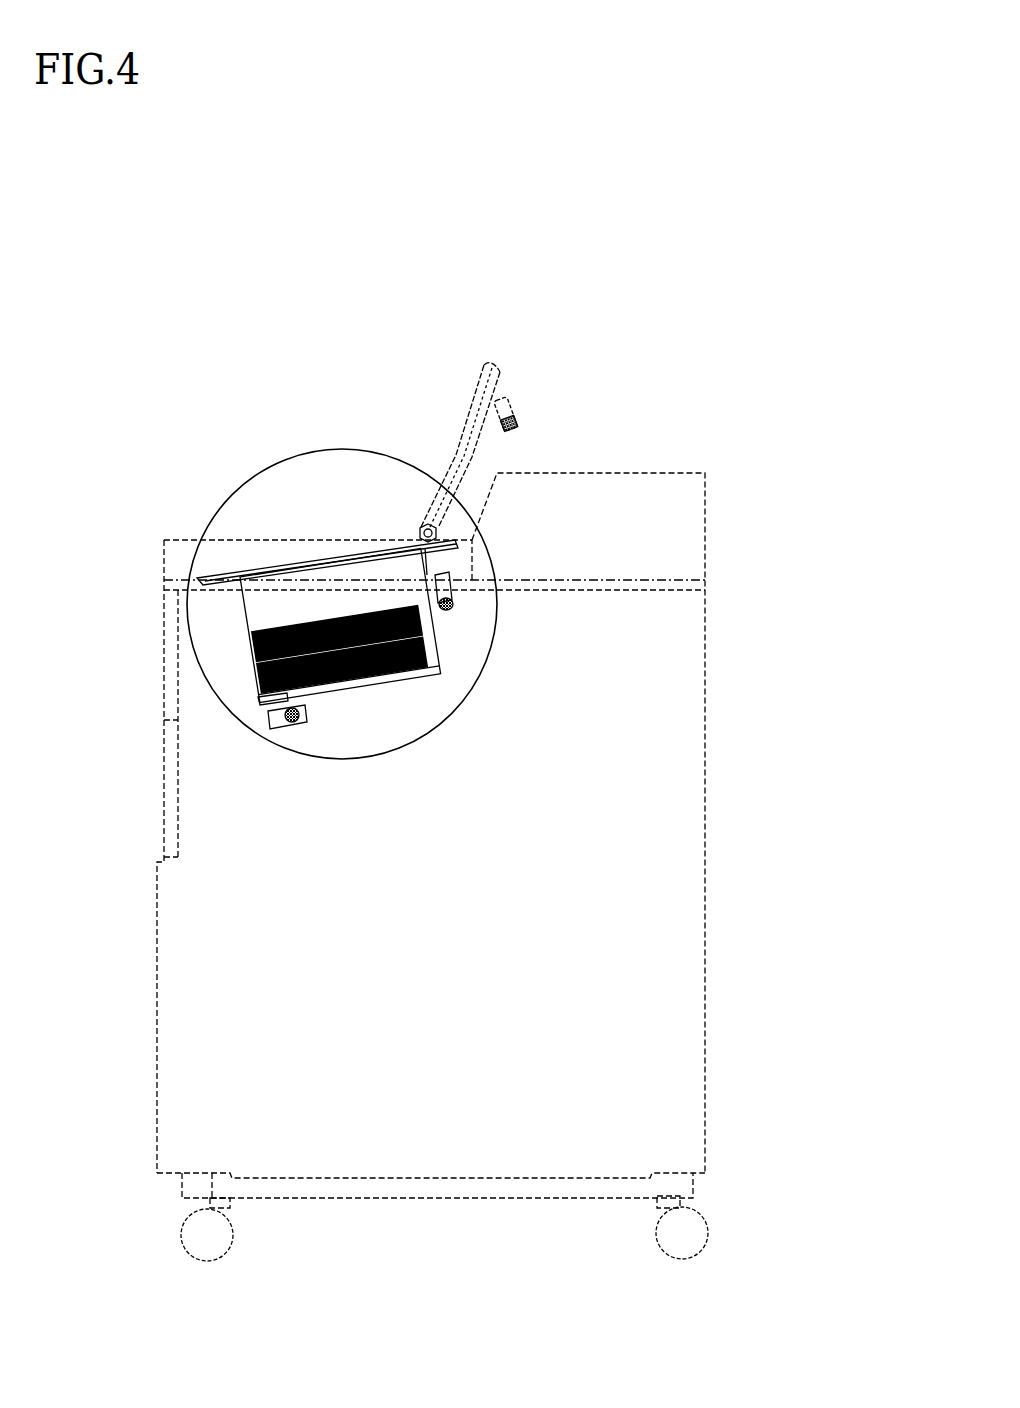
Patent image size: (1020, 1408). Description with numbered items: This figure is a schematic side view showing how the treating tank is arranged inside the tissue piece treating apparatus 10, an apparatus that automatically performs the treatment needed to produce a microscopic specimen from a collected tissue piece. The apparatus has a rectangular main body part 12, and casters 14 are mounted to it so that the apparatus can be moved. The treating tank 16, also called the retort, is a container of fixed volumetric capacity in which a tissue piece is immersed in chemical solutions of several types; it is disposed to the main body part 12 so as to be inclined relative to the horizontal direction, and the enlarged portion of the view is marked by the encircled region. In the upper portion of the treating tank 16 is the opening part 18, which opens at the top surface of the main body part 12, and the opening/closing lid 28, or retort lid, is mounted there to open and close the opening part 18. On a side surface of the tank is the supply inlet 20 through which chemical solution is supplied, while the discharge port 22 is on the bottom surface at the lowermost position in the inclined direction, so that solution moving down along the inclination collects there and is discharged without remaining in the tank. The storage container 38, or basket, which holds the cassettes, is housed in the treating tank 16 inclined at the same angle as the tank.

The tissue piece treating apparatus 10 is at (672, 190).
The main body part 12 is at (636, 436).
The caster 14 is at (685, 1235).
The treating tank 16 is at (283, 557).
The opening part 18 is at (352, 548).
The supply inlet 20 is at (427, 575).
The discharge port 22 is at (268, 720).
The opening/closing lid 28 is at (462, 408).
The storage container 38 is at (242, 634).